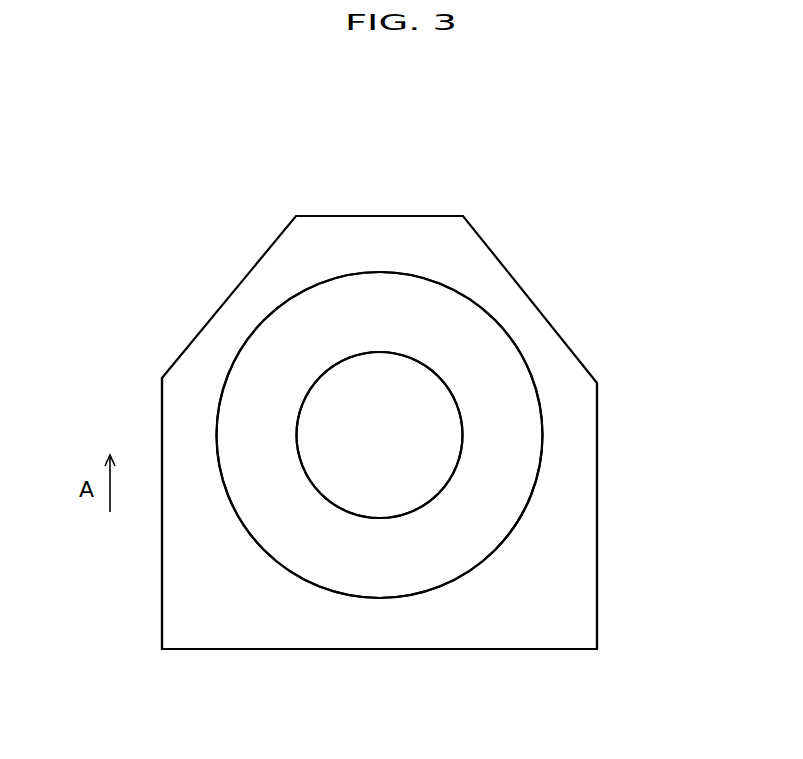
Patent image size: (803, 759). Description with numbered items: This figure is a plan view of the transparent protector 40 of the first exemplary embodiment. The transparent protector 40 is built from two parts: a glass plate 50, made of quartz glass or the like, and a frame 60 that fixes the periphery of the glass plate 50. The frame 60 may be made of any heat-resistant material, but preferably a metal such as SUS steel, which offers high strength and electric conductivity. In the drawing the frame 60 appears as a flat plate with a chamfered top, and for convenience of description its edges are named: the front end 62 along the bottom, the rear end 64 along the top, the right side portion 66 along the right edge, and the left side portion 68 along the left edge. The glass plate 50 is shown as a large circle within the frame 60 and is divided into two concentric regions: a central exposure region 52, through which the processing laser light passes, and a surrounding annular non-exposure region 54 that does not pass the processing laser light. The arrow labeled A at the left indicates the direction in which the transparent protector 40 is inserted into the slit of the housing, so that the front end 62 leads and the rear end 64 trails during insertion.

The transparent protector 40 is at (197, 265).
The glass plate 50 is at (655, 490).
The exposure region 52 is at (382, 493).
The non-exposure region 54 is at (492, 480).
The frame 60 is at (572, 472).
The front end 62 is at (422, 650).
The rear end 64 is at (382, 216).
The right side portion 66 is at (597, 610).
The left side portion 68 is at (162, 605).